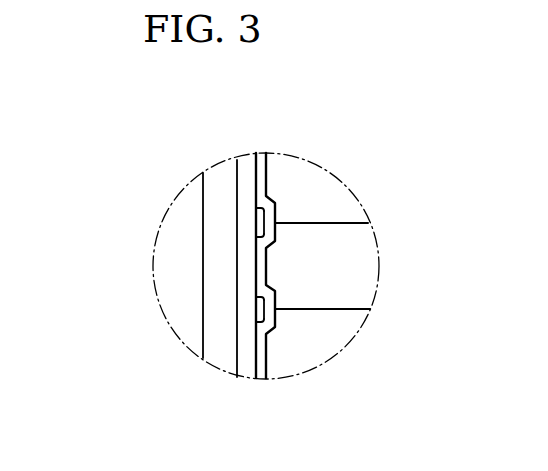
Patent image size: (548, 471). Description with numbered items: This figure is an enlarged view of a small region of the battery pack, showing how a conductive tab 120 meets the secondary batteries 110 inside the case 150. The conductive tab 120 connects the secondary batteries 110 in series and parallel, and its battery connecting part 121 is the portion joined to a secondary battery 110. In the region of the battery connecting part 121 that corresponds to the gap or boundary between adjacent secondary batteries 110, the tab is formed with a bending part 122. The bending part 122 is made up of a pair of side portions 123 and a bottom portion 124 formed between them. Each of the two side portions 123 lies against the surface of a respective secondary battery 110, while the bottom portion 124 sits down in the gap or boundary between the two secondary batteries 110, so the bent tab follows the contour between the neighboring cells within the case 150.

The secondary battery 110 is at (313, 182).
The conductive tab 120 is at (175, 258).
The battery connecting part 121 is at (256, 174).
The bending part 122 is at (169, 222).
The side portion 123 is at (258, 210).
The bottom portion 124 is at (259, 223).
The case 150 is at (215, 293).